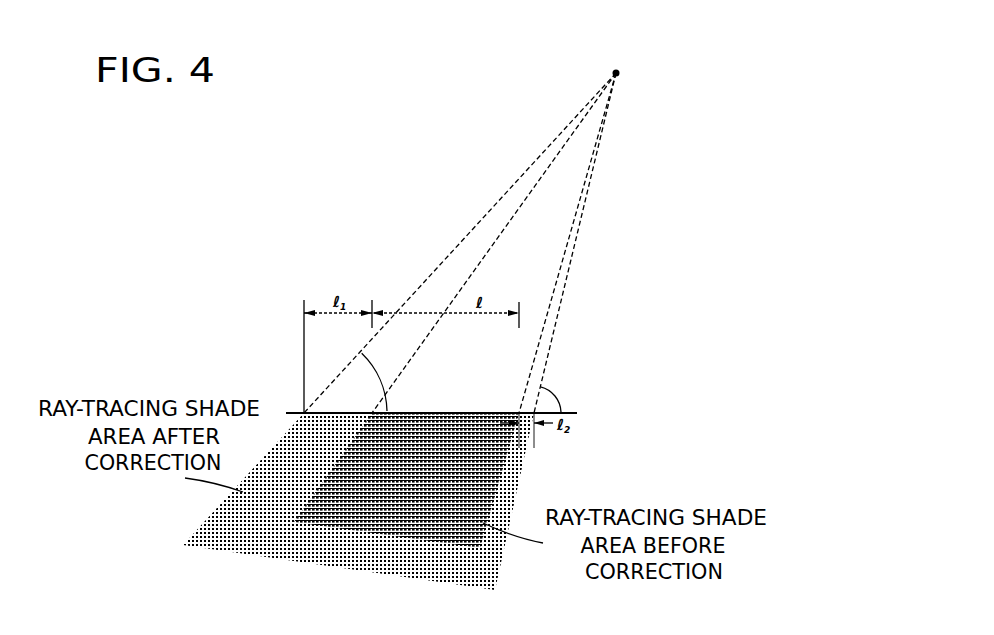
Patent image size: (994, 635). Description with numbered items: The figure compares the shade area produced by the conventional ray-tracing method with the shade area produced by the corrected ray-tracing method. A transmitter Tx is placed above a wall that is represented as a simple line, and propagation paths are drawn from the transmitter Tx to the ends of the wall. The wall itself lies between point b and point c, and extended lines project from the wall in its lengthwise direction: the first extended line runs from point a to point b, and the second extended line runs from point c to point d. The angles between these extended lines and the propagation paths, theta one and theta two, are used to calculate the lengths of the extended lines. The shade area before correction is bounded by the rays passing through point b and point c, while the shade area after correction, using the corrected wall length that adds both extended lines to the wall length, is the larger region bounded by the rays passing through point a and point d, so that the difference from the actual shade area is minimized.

The transmitter Tx is at (464, 229).
The point a is at (302, 410).
The point b is at (372, 411).
The point c is at (521, 411).
The point d is at (532, 410).